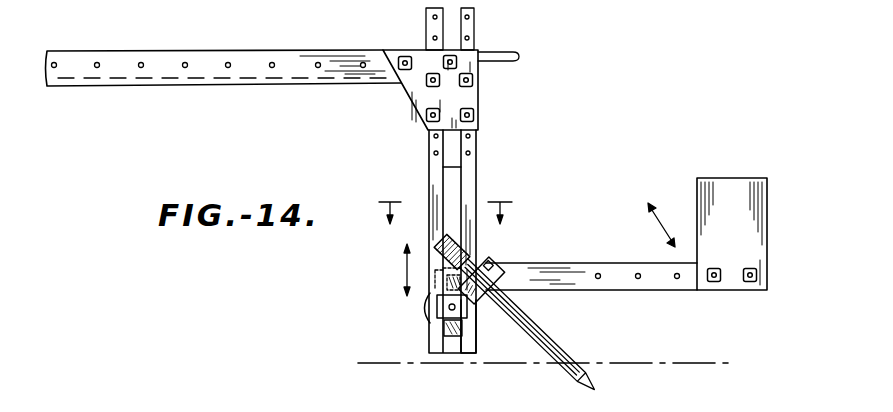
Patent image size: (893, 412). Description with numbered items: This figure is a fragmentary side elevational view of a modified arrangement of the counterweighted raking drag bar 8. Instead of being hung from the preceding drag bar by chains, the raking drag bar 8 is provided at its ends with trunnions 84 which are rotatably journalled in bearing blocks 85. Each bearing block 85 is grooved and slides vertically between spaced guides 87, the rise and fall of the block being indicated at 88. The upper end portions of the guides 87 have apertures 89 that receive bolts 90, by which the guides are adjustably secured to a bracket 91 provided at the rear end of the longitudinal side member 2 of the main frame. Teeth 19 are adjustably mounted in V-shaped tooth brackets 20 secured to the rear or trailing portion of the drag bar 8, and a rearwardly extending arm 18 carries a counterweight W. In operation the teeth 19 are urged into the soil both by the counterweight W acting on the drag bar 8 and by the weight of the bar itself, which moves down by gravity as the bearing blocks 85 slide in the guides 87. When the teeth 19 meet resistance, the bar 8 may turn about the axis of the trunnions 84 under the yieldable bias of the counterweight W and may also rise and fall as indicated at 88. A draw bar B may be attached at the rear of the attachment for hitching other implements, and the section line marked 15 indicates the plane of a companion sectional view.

The longitudinal side member 2 is at (224, 79).
The apertures 89 is at (465, 38).
The draw bar B is at (515, 53).
The bracket 91 is at (412, 97).
The bolts 90 is at (470, 112).
The guides 87 is at (460, 167).
The section line 15 is at (447, 200).
The vertical sliding movement 88 is at (405, 275).
The teeth 19 is at (568, 351).
The V-shaped tooth bracket 20 is at (492, 264).
The bearing block 85 is at (440, 322).
The raking drag bar 8 is at (427, 311).
The trunnion 84 is at (470, 312).
The rearwardly extending arm 18 is at (595, 262).
The counterweight W is at (727, 186).